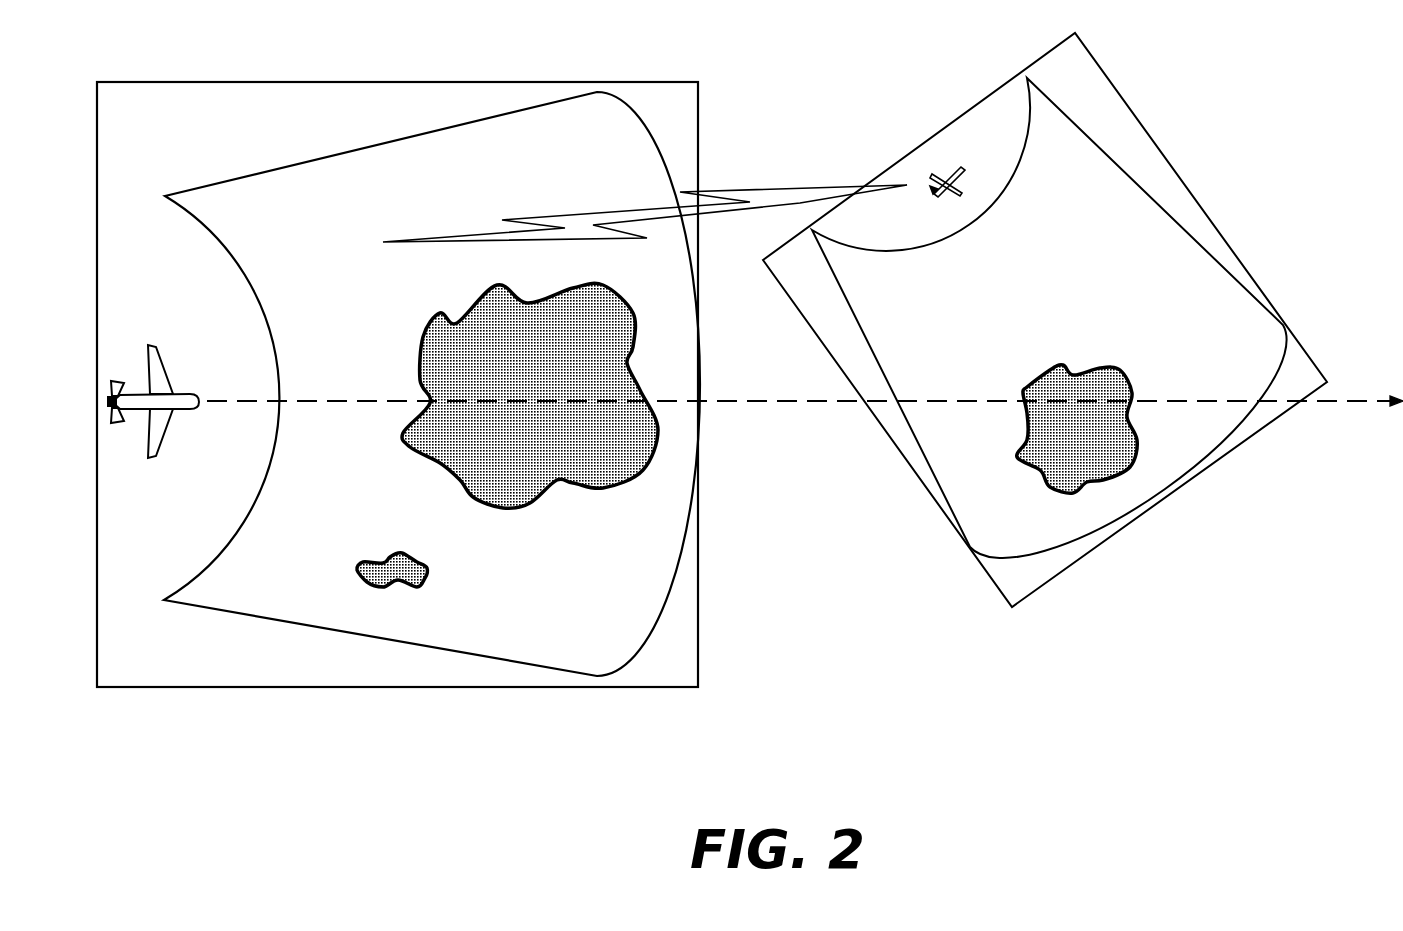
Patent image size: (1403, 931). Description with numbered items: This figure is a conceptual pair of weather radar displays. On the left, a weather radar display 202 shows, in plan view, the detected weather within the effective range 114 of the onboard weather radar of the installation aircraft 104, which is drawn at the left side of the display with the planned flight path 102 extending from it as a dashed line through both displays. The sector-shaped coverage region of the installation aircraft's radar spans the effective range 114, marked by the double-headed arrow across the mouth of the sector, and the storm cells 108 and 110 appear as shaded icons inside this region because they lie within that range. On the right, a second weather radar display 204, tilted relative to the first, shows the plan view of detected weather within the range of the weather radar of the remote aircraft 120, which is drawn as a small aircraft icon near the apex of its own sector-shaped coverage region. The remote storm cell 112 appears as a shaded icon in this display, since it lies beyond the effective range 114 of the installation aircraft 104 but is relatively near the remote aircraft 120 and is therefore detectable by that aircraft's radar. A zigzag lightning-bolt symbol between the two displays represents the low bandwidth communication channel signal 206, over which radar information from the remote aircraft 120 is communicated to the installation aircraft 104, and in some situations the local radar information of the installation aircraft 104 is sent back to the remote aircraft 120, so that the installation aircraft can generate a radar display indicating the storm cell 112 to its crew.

The planned flight path 102 is at (283, 402).
The installation aircraft 104 is at (126, 481).
The storm cell 108 is at (422, 336).
The storm cell 110 is at (428, 572).
The remote storm cell 112 is at (1122, 368).
The effective range 114 is at (594, 106).
The remote aircraft 120 is at (959, 148).
The weather radar display 202 is at (697, 610).
The weather radar display 204 is at (1047, 590).
The low bandwidth communication channel signal 206 is at (779, 167).